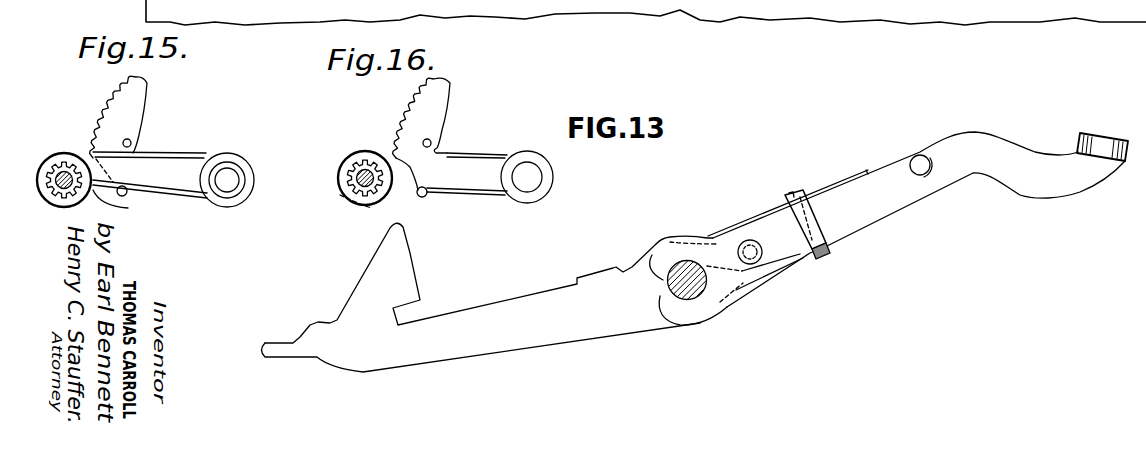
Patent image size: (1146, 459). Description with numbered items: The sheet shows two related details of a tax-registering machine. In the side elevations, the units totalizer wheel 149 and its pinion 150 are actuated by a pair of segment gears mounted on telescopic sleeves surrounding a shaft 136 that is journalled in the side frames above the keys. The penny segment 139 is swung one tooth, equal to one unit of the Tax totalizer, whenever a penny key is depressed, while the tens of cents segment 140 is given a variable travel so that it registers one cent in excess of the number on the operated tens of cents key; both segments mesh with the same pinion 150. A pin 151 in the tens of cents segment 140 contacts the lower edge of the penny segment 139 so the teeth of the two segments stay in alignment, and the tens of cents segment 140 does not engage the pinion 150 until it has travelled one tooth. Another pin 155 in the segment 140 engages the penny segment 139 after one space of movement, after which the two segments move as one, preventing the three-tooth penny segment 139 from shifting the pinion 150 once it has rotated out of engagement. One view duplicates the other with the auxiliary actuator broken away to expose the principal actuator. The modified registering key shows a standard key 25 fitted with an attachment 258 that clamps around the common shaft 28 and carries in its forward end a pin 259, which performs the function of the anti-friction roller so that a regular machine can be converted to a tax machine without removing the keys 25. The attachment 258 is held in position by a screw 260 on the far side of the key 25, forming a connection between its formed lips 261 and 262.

In FIG. 13, the key 25 is at (1030, 188).
In FIG. 13, the common shaft 28 is at (667, 285).
In FIG. 15, the shaft 136 is at (229, 179).
In FIG. 16, the shaft 136 is at (529, 177).
In FIG. 15, the penny segment gear 139 is at (176, 199).
In FIG. 16, the penny segment gear 139 is at (477, 193).
In FIG. 15, the tens of cents segment gear 140 is at (146, 88).
In FIG. 16, the tens of cents segment gear 140 is at (447, 87).
In FIG. 15, the units totalizer wheel 149 is at (126, 190).
In FIG. 16, the units totalizer wheel 149 is at (362, 200).
In FIG. 15, the units totalizer pinion 150 is at (60, 166).
In FIG. 16, the units totalizer pinion 150 is at (352, 190).
In FIG. 15, the pin 151 is at (125, 188).
In FIG. 16, the pin 151 is at (424, 198).
In FIG. 15, the pin 155 is at (131, 142).
In FIG. 16, the pin 155 is at (431, 143).
In FIG. 13, the attachment 258 is at (867, 200).
In FIG. 13, the pin 259 is at (920, 155).
In FIG. 13, the screw 260 is at (795, 196).
In FIG. 13, the formed lip 261 is at (809, 194).
In FIG. 13, the formed lip 262 is at (813, 260).